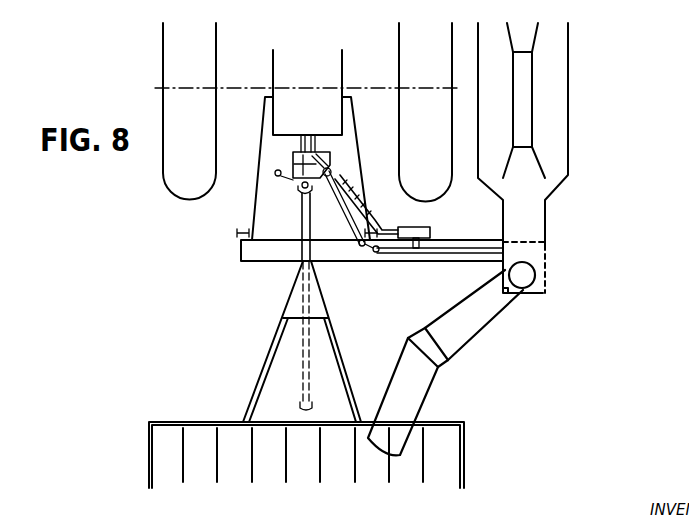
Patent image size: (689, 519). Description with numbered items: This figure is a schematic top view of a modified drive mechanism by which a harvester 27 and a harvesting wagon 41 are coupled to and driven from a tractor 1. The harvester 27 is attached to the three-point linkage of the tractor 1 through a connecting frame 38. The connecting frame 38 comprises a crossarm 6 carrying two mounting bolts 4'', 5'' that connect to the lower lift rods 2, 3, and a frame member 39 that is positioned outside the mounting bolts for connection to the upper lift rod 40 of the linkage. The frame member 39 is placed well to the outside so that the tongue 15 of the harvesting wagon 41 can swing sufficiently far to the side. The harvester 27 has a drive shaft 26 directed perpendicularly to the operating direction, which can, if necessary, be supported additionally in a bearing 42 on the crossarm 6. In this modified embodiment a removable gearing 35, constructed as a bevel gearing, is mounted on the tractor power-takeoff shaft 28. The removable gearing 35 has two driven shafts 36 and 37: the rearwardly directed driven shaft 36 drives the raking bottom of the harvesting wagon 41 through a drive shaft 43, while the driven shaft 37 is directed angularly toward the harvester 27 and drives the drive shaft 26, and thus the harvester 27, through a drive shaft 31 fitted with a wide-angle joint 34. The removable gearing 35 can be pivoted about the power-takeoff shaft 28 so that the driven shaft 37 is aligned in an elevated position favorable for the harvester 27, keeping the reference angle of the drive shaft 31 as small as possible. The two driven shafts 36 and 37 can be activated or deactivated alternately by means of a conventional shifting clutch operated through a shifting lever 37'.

The tractor 1 is at (281, 57).
The lower lift rod 2 is at (261, 116).
The lower lift rod 3 is at (354, 114).
The mounting bolt 4'' is at (230, 217).
The mounting bolt 5'' is at (387, 219).
The crossarm 6 is at (272, 258).
The tongue 15 is at (272, 337).
The drive shaft 26 is at (473, 250).
The harvester 27 is at (571, 133).
The tractor power-takeoff shaft 28 is at (317, 148).
The drive shaft 31 is at (352, 207).
The wide-angle joint 34 is at (361, 250).
The removable gearing 35 is at (293, 157).
The driven shaft 36 is at (275, 174).
The driven shaft 37 is at (358, 151).
The shifting lever 37' is at (231, 161).
The connecting frame 38 is at (240, 267).
The frame member 39 is at (431, 240).
The upper lift rod 40 is at (348, 183).
The harvesting wagon 41 is at (161, 422).
The bearing 42 is at (380, 253).
The drive shaft 43 is at (305, 200).